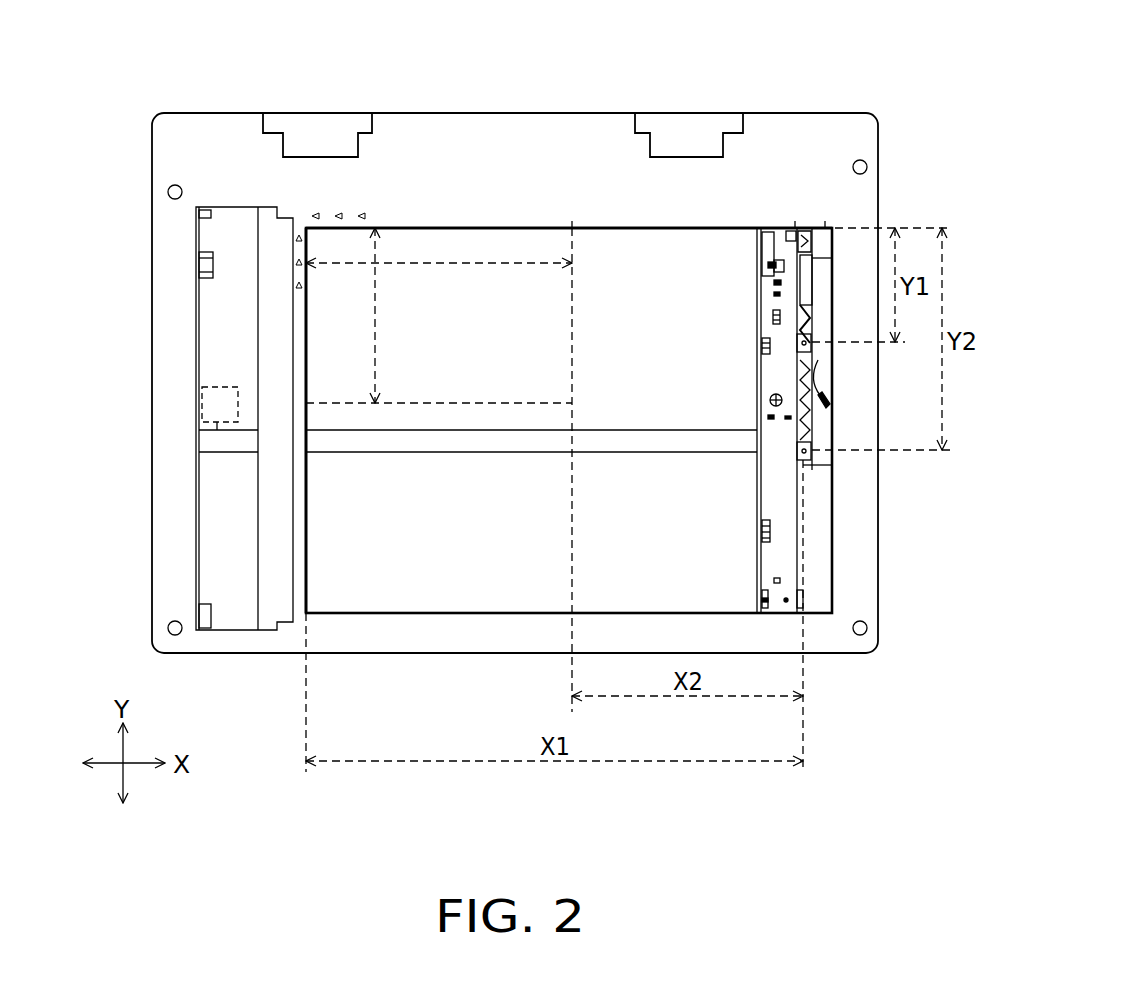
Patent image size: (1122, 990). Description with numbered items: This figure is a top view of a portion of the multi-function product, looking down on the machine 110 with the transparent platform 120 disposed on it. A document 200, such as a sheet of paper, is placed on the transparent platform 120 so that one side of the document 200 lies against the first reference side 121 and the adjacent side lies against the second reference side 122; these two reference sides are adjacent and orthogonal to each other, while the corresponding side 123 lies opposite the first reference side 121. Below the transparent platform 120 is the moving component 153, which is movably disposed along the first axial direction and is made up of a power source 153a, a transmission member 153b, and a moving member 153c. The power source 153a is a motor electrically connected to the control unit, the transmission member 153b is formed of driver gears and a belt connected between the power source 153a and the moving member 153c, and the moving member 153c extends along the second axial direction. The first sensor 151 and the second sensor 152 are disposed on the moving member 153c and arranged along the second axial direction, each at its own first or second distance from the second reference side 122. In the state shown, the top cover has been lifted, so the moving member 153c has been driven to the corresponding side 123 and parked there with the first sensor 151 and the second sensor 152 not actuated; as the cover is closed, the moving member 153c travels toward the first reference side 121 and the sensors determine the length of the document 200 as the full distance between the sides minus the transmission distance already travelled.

The machine 110 is at (215, 112).
The transparent platform 120 is at (215, 507).
The first reference side 121 is at (303, 313).
The second reference side 122 is at (432, 225).
The corresponding side 123 is at (808, 505).
The first sensor 151 is at (797, 340).
The second sensor 152 is at (797, 452).
The moving component 153 is at (920, 118).
The power source 153a is at (215, 405).
The transmission member 153b is at (427, 440).
The moving member 153c is at (765, 282).
The document 200 is at (548, 297).